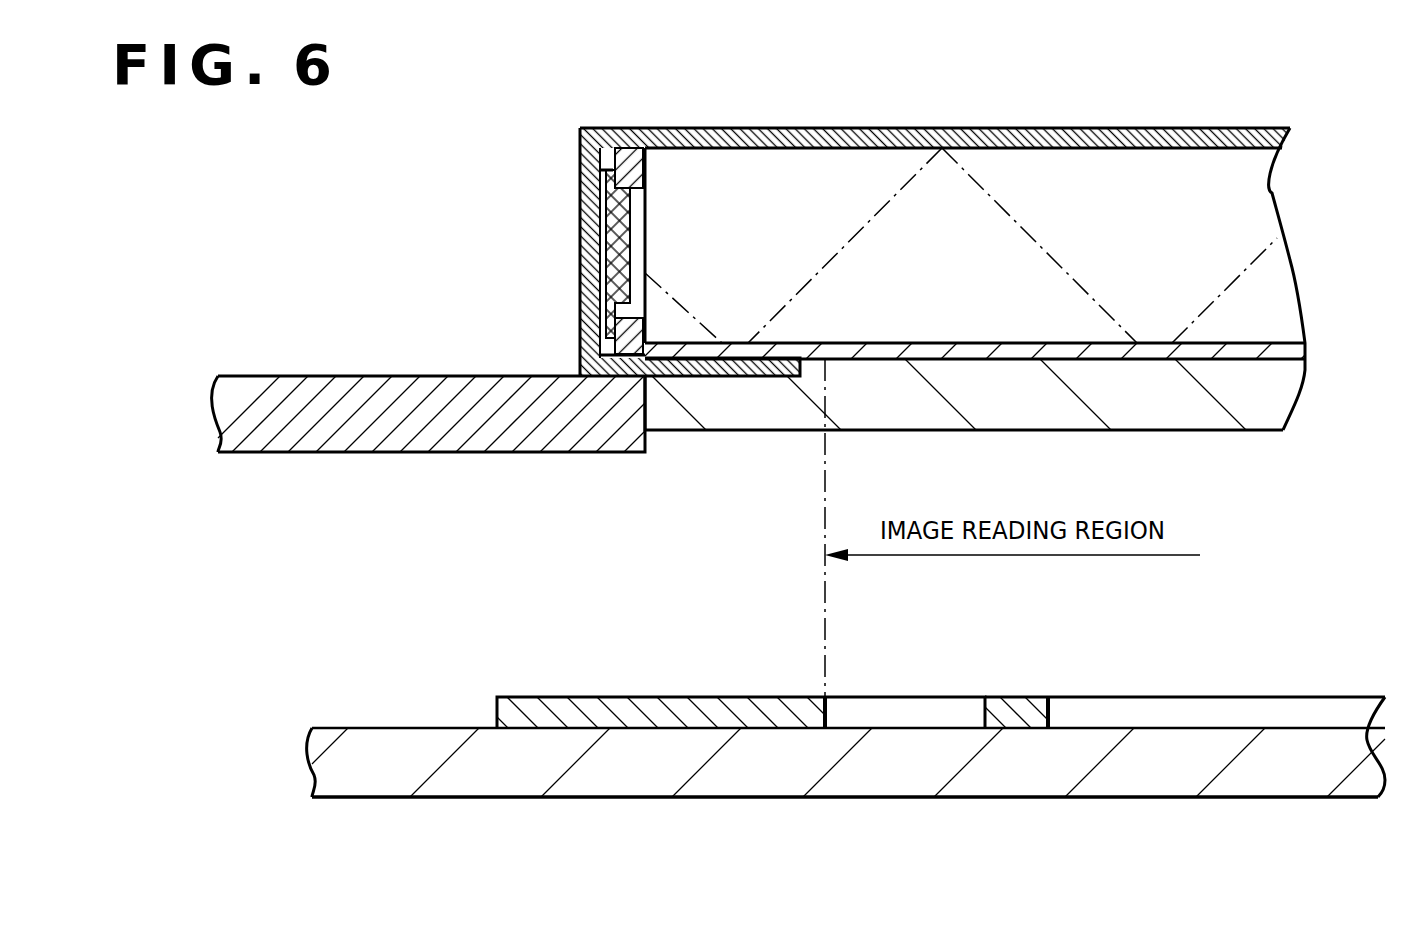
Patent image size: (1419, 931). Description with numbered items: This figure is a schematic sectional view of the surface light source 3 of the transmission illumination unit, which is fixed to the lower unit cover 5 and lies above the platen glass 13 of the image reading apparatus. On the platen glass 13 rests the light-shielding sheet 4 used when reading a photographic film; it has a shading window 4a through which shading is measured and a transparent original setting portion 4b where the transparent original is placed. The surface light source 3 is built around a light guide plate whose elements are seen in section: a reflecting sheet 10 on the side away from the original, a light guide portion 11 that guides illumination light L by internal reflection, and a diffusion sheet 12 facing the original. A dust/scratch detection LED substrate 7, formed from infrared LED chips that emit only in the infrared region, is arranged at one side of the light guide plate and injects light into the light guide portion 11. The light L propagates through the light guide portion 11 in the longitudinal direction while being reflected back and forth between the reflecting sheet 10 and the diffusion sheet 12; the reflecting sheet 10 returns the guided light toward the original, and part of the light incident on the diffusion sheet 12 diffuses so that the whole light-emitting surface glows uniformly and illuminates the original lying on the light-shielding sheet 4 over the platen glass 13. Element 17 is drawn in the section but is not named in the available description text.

The surface light source 3 is at (1215, 66).
The light-shielding sheet 4 is at (663, 697).
The shading window 4a is at (903, 697).
The transparent original setting portion 4b is at (1210, 697).
The lower unit cover 5 is at (415, 395).
The dust/scratch detection LED substrate 7 is at (630, 130).
The reflecting sheet 10 is at (845, 140).
The light guide portion 11 is at (733, 165).
The diffusion sheet 12 is at (1245, 352).
The platen glass 13 is at (840, 780).
The sensor substrate 17 is at (735, 412).
The illumination light L is at (993, 190).